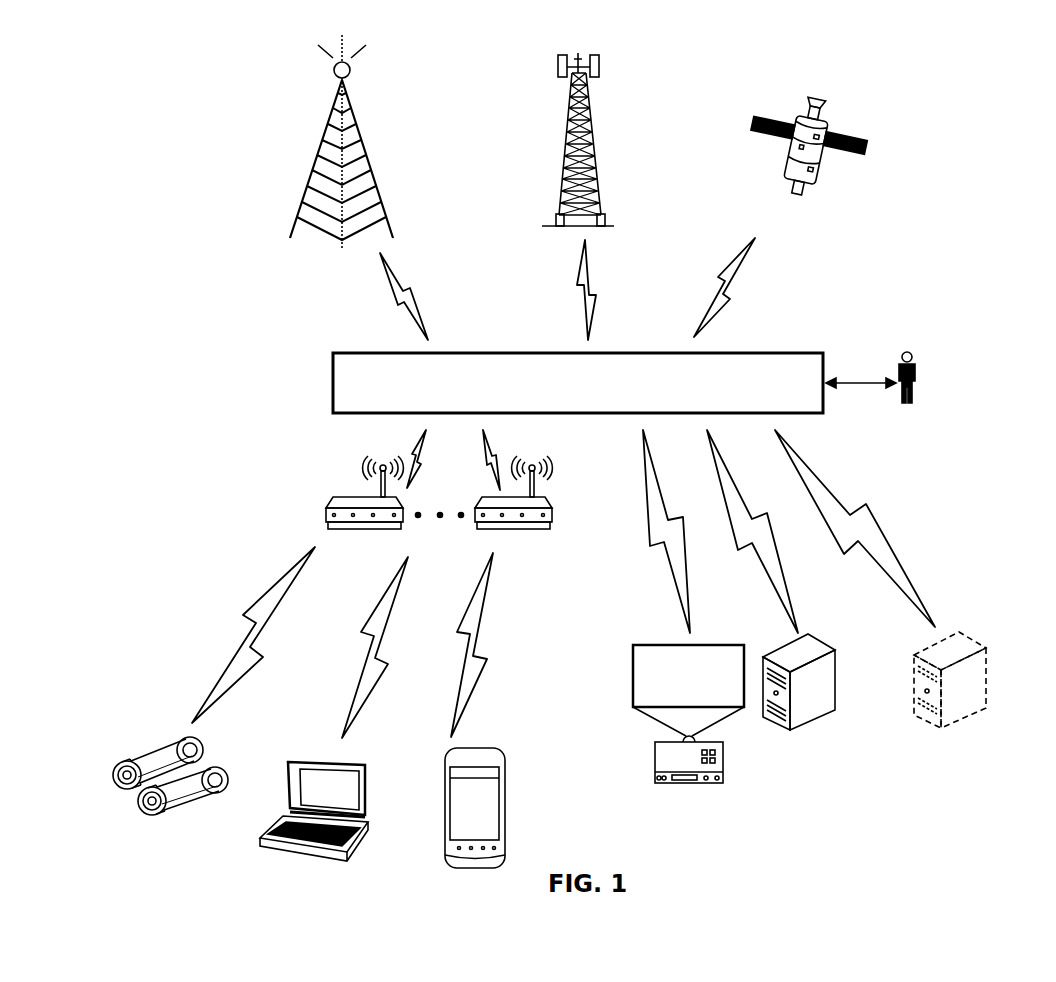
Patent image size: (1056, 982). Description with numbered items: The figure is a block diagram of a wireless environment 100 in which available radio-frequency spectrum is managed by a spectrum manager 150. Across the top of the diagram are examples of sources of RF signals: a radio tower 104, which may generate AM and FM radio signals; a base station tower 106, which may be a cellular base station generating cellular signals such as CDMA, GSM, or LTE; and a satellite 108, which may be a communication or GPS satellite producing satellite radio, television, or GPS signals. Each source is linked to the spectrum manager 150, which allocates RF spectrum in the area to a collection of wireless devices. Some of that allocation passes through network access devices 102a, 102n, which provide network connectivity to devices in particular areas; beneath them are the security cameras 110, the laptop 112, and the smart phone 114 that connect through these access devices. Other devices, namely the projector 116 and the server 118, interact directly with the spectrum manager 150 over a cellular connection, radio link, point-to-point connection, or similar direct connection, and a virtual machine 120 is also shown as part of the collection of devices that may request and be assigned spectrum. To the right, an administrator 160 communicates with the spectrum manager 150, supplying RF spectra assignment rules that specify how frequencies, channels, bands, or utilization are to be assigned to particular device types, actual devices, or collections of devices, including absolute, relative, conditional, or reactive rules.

The wireless environment 100 is at (110, 93).
The network access device 102a is at (328, 509).
The network access device 102n is at (552, 509).
The radio tower 104 is at (316, 151).
The base station tower 106 is at (565, 128).
The satellite 108 is at (790, 148).
The security cameras 110 is at (115, 773).
The laptop 112 is at (307, 758).
The smart phone 114 is at (508, 807).
The projector 116 is at (630, 675).
The server 118 is at (838, 673).
The virtual machine 120 is at (990, 671).
The spectrum manager 150 is at (515, 352).
The administrator 160 is at (912, 390).